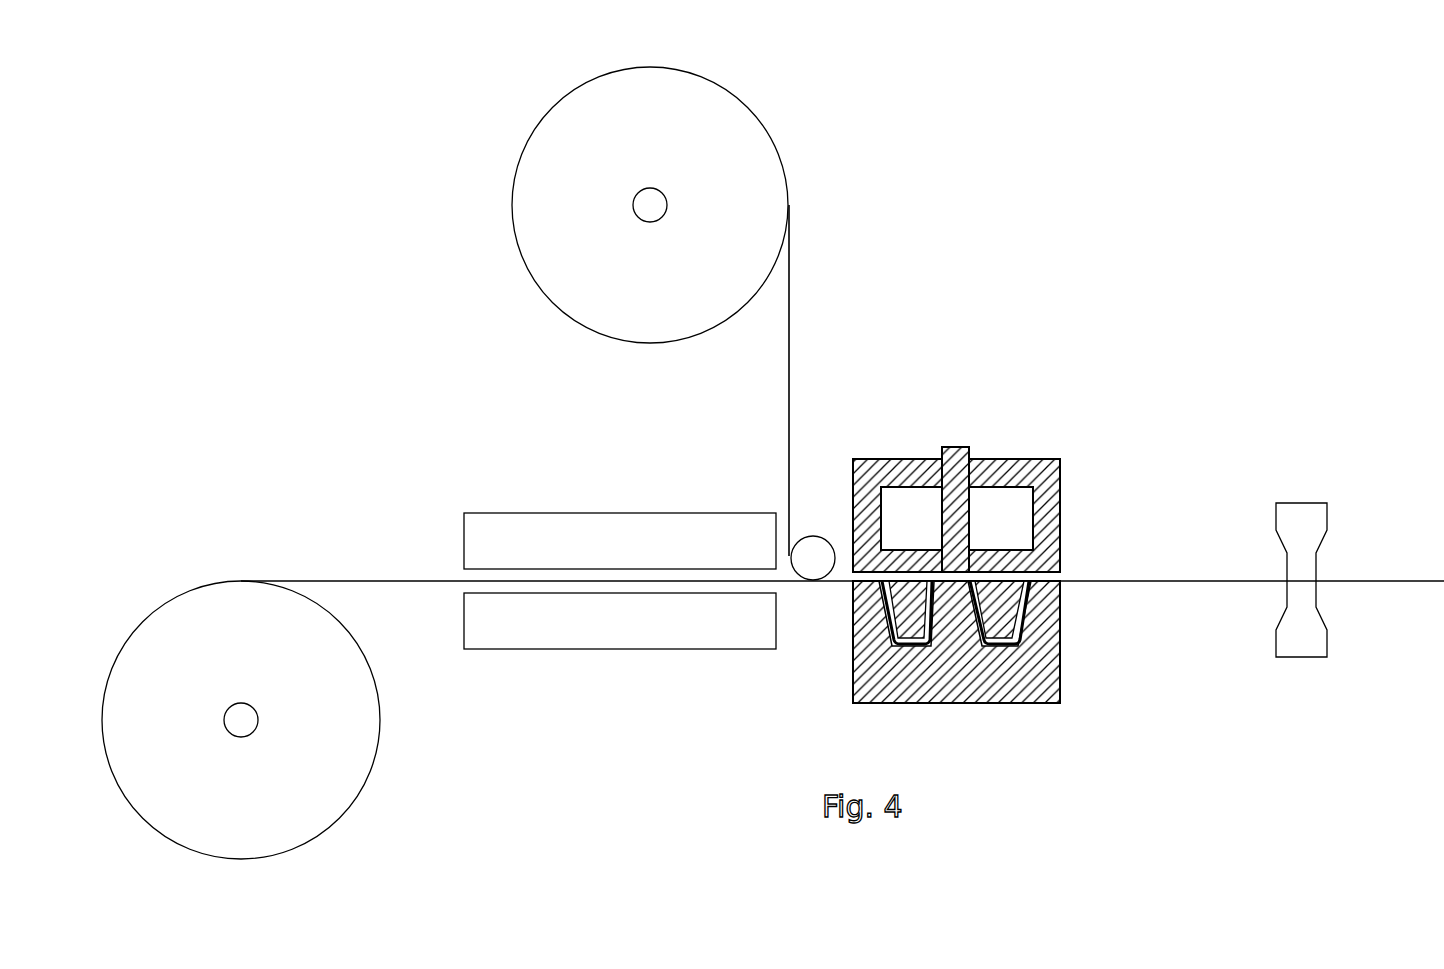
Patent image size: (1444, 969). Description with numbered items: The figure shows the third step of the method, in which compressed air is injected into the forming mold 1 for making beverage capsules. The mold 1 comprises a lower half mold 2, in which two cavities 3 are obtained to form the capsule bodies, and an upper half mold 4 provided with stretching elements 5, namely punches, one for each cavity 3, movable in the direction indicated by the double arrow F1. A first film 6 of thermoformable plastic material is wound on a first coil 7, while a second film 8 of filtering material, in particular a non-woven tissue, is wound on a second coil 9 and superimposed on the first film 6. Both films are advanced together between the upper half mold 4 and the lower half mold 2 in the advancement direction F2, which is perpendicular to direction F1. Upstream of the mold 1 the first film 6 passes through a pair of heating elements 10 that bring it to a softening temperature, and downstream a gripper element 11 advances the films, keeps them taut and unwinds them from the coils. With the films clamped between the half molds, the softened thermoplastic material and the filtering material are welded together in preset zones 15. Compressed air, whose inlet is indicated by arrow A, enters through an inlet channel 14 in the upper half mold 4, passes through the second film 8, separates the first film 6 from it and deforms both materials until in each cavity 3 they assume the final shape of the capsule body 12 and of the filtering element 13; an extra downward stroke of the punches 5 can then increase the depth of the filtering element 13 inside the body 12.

The forming mold 1 is at (1067, 447).
The lower half mold 2 is at (977, 629).
The cavity 3 is at (908, 645).
The upper half mold 4 is at (972, 455).
The stretching element 5 is at (887, 580).
The first film 6 is at (411, 581).
The first coil 7 is at (348, 765).
The second film 8 is at (789, 327).
The second coil 9 is at (578, 198).
The heating elements 10 is at (637, 528).
The gripper element 11 is at (1303, 515).
The capsule body 12 is at (917, 600).
The filtering element 13 is at (882, 637).
The inlet channel 14 is at (1060, 490).
The preset zones 15 is at (942, 580).
The arrow A is at (1062, 513).
The double arrow F1 is at (957, 297).
The arrow F2 is at (1195, 594).